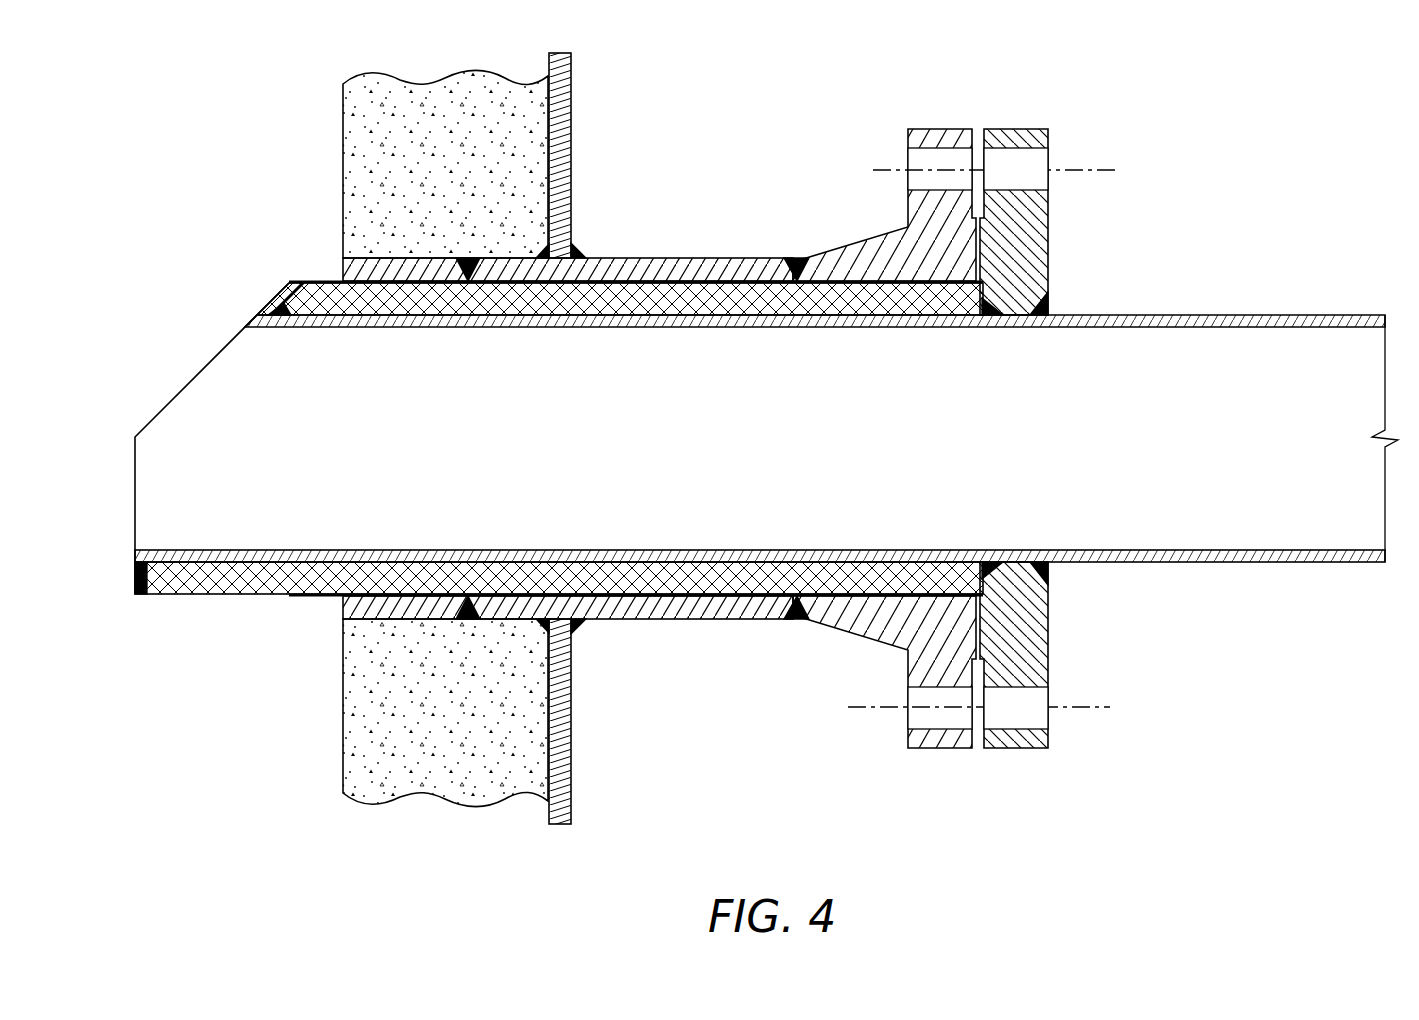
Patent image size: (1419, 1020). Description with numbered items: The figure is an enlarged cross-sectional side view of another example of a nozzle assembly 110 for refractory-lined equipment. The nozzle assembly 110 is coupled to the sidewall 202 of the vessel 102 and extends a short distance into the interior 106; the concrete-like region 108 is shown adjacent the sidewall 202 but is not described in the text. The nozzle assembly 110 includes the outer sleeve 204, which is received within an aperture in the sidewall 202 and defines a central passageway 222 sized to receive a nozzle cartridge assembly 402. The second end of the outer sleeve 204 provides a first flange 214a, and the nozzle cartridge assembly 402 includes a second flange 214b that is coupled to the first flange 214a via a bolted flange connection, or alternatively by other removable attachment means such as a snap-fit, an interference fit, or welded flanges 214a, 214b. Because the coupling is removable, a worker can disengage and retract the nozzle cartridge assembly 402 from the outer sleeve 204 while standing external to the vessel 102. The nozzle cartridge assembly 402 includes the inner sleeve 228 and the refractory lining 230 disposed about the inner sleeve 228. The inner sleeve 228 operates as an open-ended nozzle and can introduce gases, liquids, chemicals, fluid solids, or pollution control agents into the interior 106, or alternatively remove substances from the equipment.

The nozzle assembly 110 is at (1129, 61).
The vessel 102 is at (571, 77).
The interior 106 is at (230, 153).
The concrete wall 108 is at (466, 152).
The sidewall 202 is at (573, 157).
The outer sleeve 204 is at (637, 259).
The central passageway 222 is at (774, 287).
The first flange 214a is at (918, 128).
The second flange 214b is at (1018, 128).
The nozzle cartridge assembly 402 is at (1054, 293).
The refractory lining 230 is at (300, 300).
The inner sleeve 228 is at (287, 328).